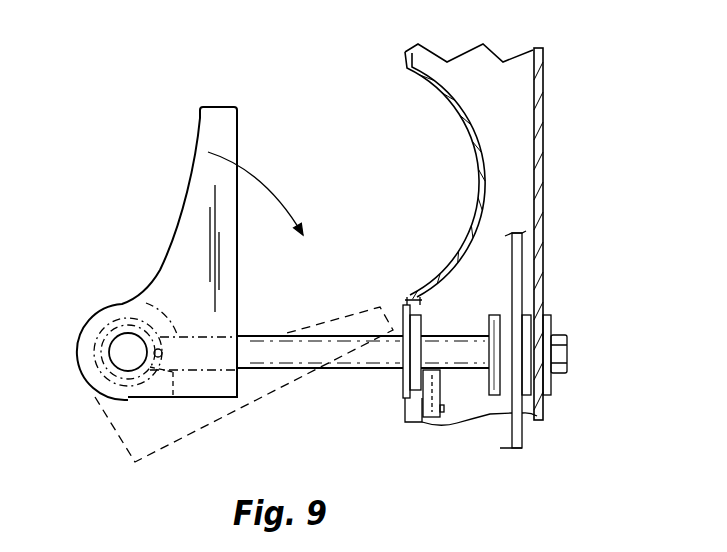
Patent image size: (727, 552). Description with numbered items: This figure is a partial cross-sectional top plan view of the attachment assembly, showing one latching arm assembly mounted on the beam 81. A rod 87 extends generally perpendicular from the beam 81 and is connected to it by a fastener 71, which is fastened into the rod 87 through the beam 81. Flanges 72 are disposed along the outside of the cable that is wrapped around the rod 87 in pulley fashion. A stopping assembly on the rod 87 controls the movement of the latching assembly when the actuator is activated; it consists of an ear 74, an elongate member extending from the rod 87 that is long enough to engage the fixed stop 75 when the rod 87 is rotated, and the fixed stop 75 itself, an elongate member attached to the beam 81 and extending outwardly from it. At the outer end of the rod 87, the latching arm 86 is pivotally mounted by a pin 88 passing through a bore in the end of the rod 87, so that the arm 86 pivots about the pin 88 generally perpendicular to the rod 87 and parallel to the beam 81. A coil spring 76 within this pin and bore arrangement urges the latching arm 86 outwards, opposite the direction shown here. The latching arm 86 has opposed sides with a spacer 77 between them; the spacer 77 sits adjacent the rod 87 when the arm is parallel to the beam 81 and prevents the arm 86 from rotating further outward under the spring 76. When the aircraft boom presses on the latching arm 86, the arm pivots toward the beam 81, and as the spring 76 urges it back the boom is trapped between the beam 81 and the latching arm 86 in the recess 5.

The recess 5 is at (455, 162).
The fastener 71 is at (553, 333).
The flanges 72 is at (495, 400).
The ear 74 is at (433, 417).
The fixed stop 75 is at (410, 400).
The spring 76 is at (162, 356).
The spacer 77 is at (225, 383).
The beam 81 is at (543, 117).
The latching arm 86 is at (220, 107).
The rod 87 is at (352, 362).
The pin 88 is at (120, 345).